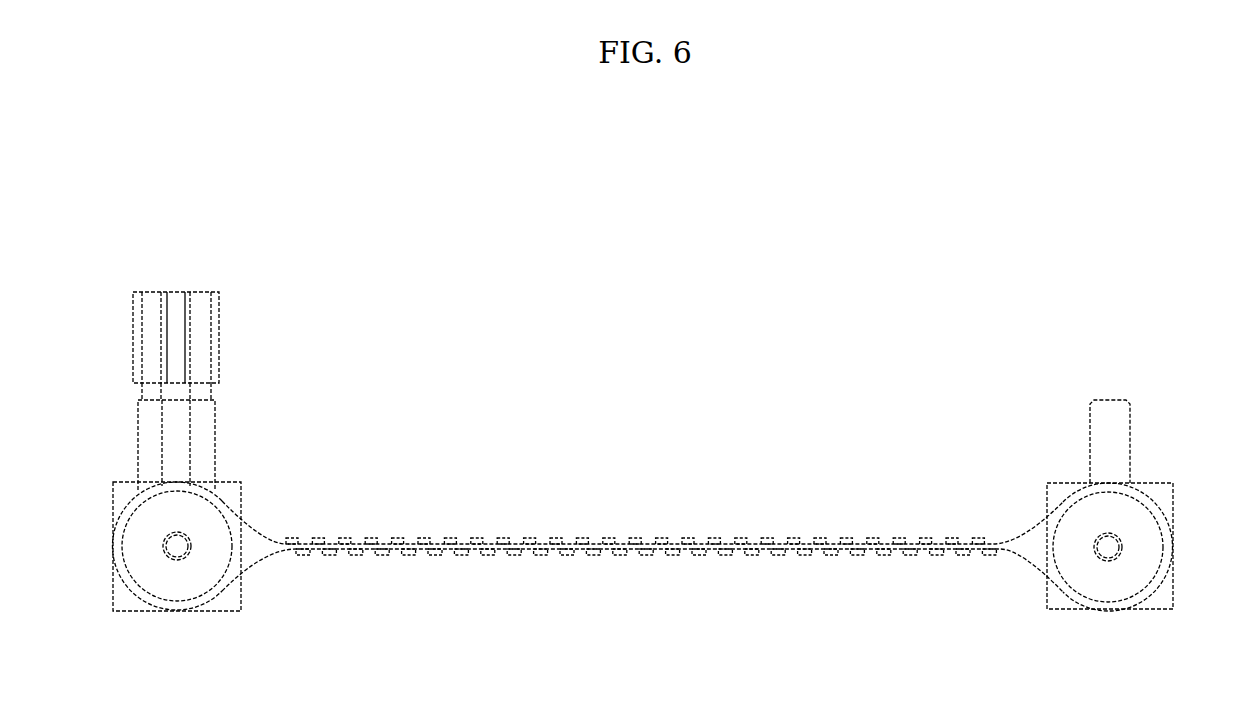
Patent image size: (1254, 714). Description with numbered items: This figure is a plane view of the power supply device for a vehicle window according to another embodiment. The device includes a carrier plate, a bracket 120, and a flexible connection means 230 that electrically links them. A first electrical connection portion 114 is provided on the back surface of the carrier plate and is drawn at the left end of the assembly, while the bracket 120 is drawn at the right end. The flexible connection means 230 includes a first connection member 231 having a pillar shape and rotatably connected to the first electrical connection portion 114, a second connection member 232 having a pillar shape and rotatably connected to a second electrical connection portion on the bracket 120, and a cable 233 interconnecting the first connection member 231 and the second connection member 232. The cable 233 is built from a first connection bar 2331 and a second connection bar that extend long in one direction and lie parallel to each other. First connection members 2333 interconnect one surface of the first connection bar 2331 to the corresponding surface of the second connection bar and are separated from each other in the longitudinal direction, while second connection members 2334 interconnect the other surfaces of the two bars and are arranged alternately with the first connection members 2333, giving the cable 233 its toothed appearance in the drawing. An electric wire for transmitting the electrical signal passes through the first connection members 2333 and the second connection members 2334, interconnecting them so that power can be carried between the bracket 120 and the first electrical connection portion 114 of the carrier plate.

The first electrical connection portion 114 is at (230, 467).
The bracket 120 is at (1158, 470).
The flexible connection means 230 is at (928, 385).
The first connection member 231 is at (198, 528).
The driven pulley 232 is at (1077, 525).
The belt 233 is at (642, 528).
The first connection bar 2331 is at (623, 545).
The first connection members 2333 is at (590, 555).
The second connection members 2334 is at (557, 538).